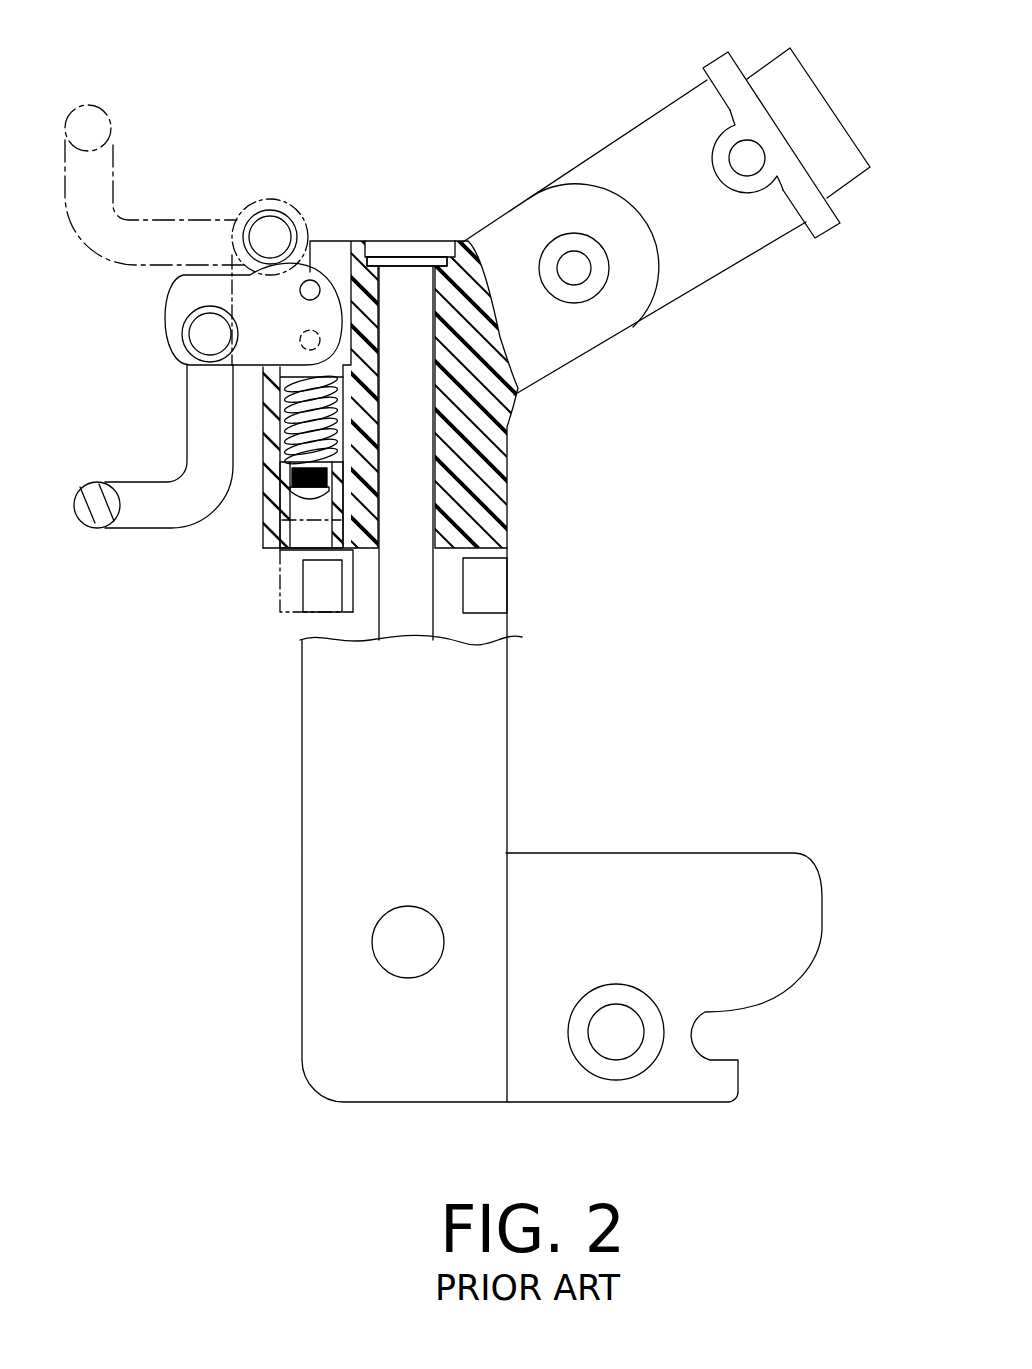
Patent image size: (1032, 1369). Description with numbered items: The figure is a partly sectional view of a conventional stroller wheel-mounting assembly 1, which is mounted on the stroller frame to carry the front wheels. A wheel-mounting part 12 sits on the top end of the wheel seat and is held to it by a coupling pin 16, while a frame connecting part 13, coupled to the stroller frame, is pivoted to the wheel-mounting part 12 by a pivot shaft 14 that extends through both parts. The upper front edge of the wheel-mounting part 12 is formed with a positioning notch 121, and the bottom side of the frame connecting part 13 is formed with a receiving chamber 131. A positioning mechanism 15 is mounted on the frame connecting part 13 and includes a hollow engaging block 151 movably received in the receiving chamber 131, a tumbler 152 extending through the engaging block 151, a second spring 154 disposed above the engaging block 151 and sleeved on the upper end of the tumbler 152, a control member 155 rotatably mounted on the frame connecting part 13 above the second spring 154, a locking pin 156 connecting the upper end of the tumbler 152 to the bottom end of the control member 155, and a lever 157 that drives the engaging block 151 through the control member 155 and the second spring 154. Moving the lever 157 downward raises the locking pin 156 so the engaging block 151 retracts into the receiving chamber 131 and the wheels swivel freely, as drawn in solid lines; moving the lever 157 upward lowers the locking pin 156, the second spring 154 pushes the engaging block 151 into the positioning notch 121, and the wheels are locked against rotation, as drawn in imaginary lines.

The wheel-mounting assembly 1 is at (572, 540).
The wheel-mounting part 12 is at (483, 722).
The positioning notch 121 is at (348, 615).
The frame connecting part 13 is at (667, 133).
The receiving chamber 131 is at (340, 420).
The pivot shaft 14 is at (407, 365).
The positioning mechanism 15 is at (226, 162).
The engaging block 151 is at (330, 585).
The tumbler 152 is at (307, 494).
The second spring 154 is at (288, 443).
The control member 155 is at (168, 306).
The locking pin 156 is at (310, 290).
The lever 157 is at (152, 248).
The coupling pin 16 is at (390, 947).